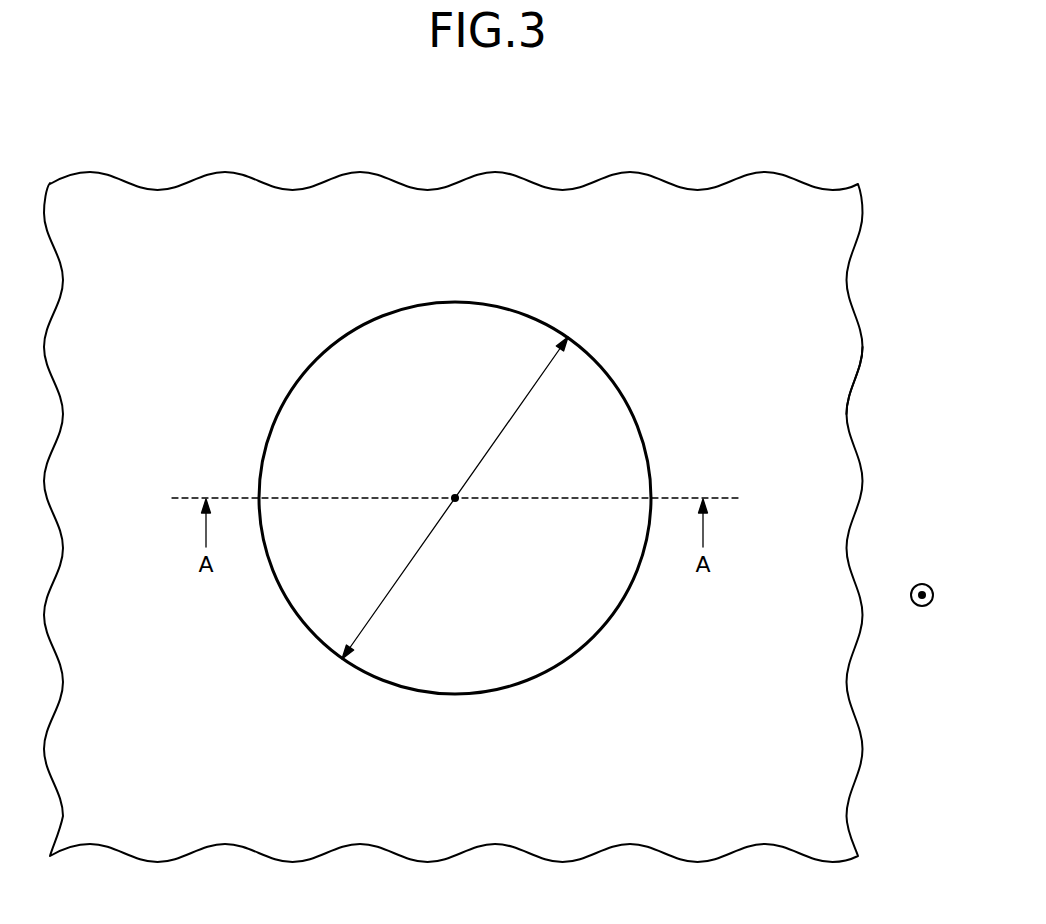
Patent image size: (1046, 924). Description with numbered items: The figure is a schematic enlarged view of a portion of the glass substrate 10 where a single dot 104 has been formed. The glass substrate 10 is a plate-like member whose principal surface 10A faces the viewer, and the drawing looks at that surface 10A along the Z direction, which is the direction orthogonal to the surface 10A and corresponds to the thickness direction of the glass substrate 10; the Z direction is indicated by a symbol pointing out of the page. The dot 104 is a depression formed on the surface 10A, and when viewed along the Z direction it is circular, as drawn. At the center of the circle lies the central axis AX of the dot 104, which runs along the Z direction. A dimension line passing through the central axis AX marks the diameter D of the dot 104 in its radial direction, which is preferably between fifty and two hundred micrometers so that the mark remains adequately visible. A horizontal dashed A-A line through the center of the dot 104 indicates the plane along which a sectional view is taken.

The glass substrate 10 is at (813, 168).
The surface 10A is at (843, 363).
The dot 104 is at (652, 304).
The central axis AX is at (460, 502).
The diameter D is at (410, 563).
The Z direction Z is at (932, 598).